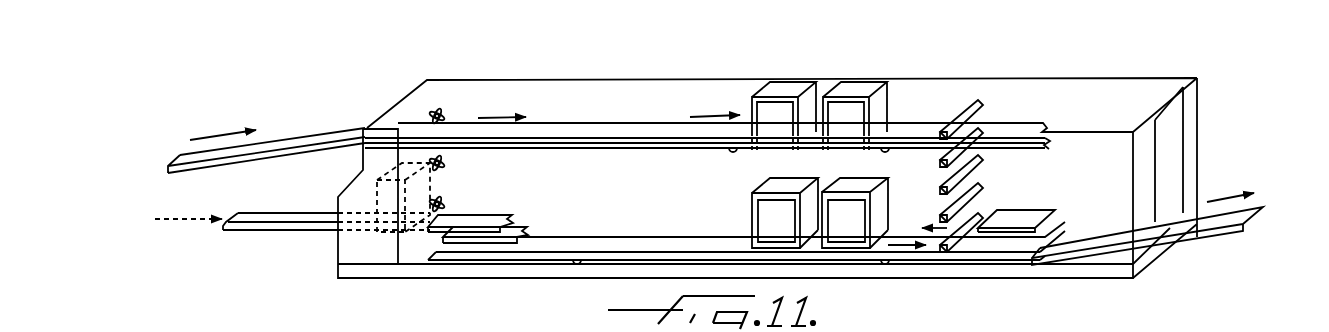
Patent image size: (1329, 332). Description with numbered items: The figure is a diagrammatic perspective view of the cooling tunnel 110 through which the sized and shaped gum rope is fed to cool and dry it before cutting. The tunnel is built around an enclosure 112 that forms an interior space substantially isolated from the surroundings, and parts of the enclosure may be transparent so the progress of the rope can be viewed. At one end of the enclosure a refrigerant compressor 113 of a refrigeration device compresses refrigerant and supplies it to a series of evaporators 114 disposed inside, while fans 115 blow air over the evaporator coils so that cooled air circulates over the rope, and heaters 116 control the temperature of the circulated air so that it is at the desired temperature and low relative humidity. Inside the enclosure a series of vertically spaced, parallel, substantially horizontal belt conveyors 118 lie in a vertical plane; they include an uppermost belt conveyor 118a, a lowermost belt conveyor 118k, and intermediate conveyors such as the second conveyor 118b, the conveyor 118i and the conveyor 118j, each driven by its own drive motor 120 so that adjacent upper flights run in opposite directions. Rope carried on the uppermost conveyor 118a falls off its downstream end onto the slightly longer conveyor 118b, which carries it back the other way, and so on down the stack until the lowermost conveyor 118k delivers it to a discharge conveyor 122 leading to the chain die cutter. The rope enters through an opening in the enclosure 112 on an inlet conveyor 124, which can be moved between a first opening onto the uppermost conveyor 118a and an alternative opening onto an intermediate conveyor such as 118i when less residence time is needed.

The cooling tunnel 110 is at (396, 76).
The enclosure 112 is at (693, 76).
The refrigerant compressor 113 is at (398, 195).
The evaporators 114 is at (758, 91).
The fans 115 is at (441, 108).
The heaters 116 is at (982, 183).
The belt conveyors 118 is at (597, 121).
The uppermost belt conveyor 118a is at (549, 128).
The second belt conveyor 118b is at (683, 152).
The intermediate belt conveyor 118i is at (500, 215).
The intermediate belt conveyor 118j is at (485, 243).
The lowermost belt conveyor 118k is at (693, 240).
The drive motor 120 is at (1119, 325).
The discharge conveyor 122 is at (1212, 233).
The inlet conveyor 124 is at (238, 212).